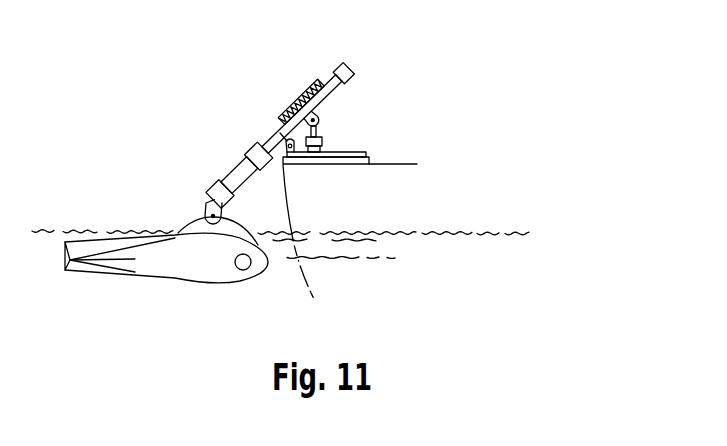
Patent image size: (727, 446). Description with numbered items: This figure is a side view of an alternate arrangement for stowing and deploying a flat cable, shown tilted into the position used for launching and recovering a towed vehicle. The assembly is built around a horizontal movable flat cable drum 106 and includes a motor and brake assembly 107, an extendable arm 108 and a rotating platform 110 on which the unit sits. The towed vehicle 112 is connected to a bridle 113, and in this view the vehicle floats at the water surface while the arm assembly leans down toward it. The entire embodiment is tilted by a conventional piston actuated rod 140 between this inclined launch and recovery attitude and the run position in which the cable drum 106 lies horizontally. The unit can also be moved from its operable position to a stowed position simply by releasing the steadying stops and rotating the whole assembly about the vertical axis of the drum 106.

The flat cable drum 106 is at (298, 92).
The motor and brake assembly 107 is at (355, 73).
The extendable arm 108 is at (241, 164).
The rotating platform 110 is at (360, 152).
The towed vehicle 112 is at (205, 270).
The bridle 113 is at (199, 221).
The piston actuated rod 140 is at (330, 137).